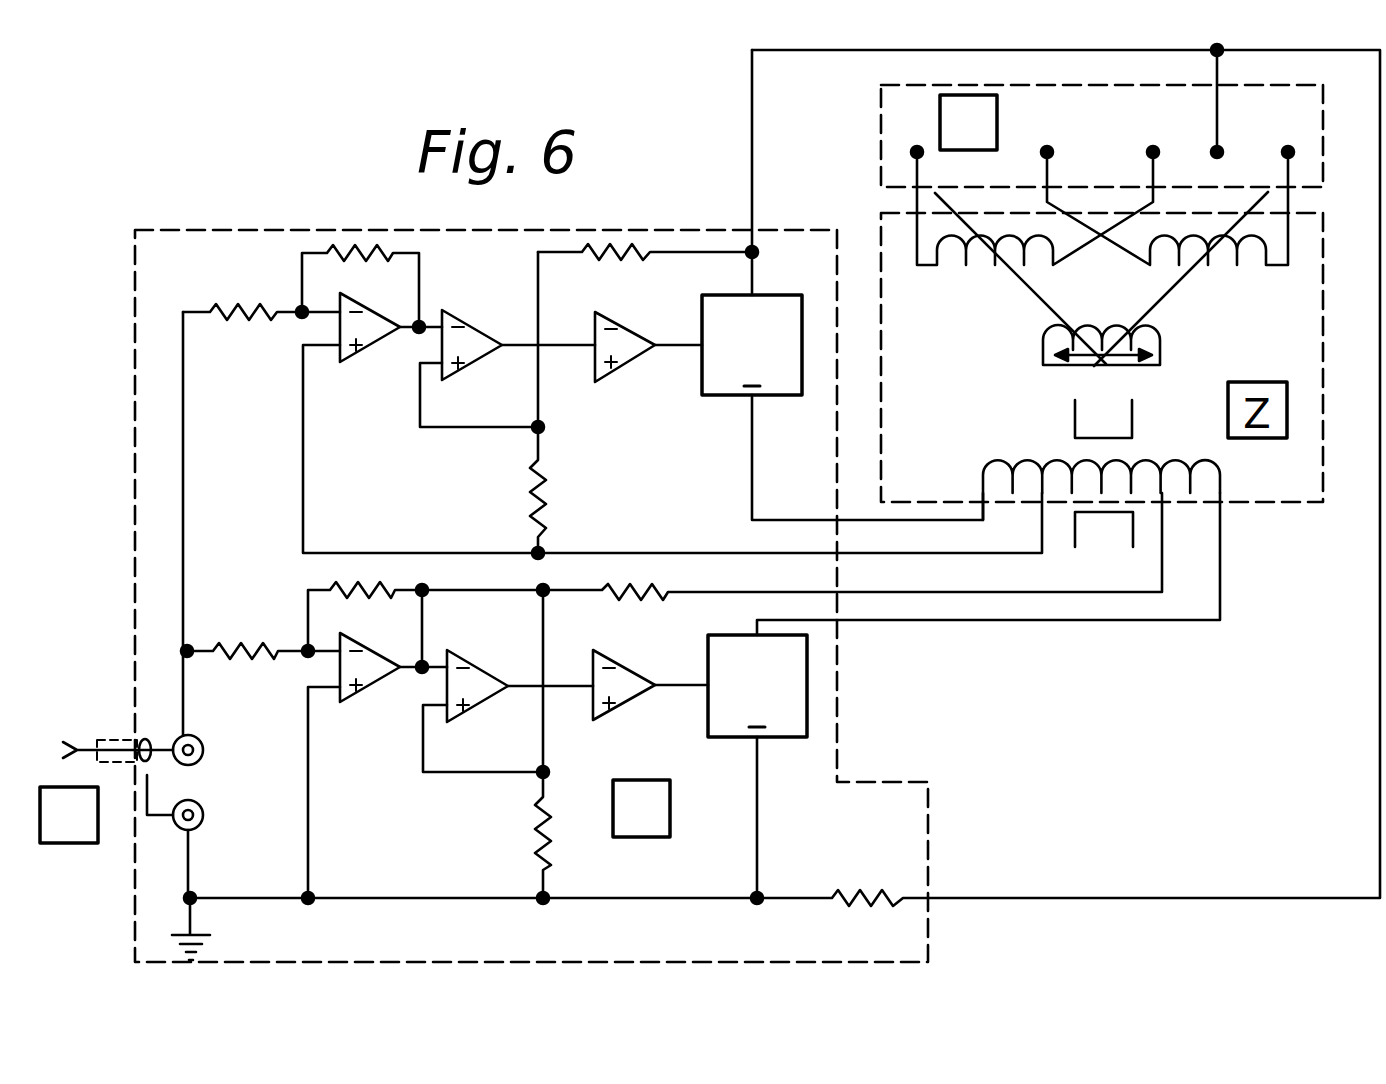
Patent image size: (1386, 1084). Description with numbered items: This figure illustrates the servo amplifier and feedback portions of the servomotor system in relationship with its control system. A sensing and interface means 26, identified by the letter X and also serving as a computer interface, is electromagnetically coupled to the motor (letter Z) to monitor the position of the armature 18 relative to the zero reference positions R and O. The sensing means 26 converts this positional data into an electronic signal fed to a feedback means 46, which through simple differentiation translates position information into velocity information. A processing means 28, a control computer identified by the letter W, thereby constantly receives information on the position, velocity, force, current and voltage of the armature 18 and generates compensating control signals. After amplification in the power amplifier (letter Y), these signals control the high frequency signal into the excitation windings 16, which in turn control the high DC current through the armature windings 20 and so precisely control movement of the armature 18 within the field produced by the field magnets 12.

The field magnets 12 is at (1132, 415).
The excitation windings 16 is at (1045, 458).
The armature 18 is at (1043, 340).
The armature windings 20 is at (1172, 332).
The sensing and interface means 26 is at (1323, 113).
The processing means 28 is at (53, 745).
The feedback means 46 is at (243, 230).